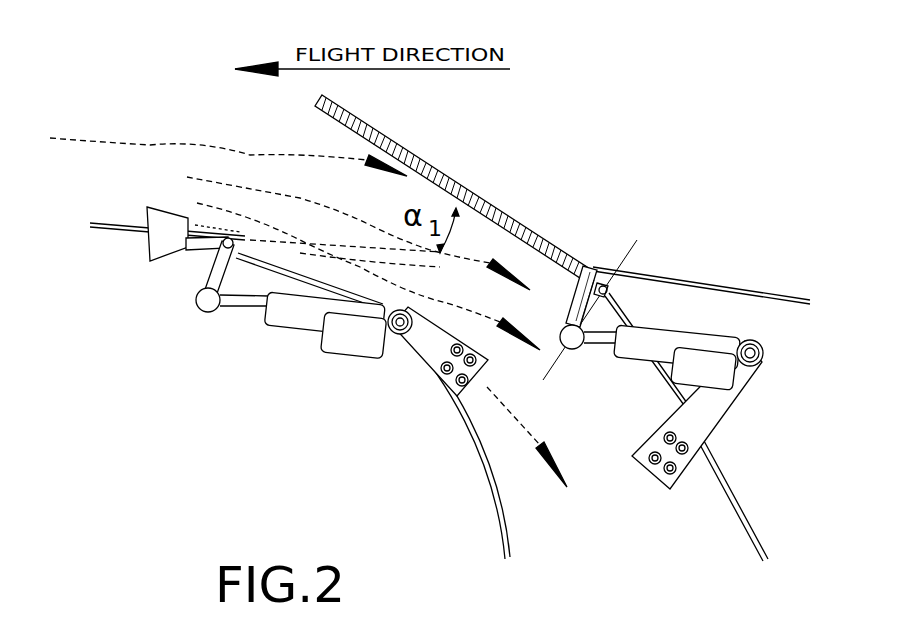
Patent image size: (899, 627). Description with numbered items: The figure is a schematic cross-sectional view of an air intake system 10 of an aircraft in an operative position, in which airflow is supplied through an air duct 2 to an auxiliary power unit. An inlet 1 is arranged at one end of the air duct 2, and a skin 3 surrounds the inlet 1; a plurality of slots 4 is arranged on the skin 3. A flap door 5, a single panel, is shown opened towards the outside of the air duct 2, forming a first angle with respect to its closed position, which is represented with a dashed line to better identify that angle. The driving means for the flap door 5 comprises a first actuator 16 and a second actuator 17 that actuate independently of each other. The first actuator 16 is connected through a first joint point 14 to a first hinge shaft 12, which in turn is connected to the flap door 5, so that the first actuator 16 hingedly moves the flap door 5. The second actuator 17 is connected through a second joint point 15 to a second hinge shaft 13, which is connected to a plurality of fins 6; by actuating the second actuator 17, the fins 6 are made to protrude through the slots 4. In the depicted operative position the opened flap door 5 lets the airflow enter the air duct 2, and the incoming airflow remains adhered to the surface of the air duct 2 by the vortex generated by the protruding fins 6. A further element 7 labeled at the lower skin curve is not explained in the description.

The inlet 1 is at (310, 237).
The air duct 2 is at (533, 478).
The skin 3 is at (108, 224).
The slots 4 is at (200, 228).
The flap door 5 is at (408, 150).
The fins 6 is at (140, 234).
The rib 7 is at (510, 515).
The air intake system 10 is at (618, 197).
The first hinge shaft 12 is at (612, 294).
The second hinge shaft 13 is at (213, 262).
The first joint point 14 is at (573, 345).
The second joint point 15 is at (205, 305).
The first actuator 16 is at (748, 331).
The second actuator 17 is at (332, 360).